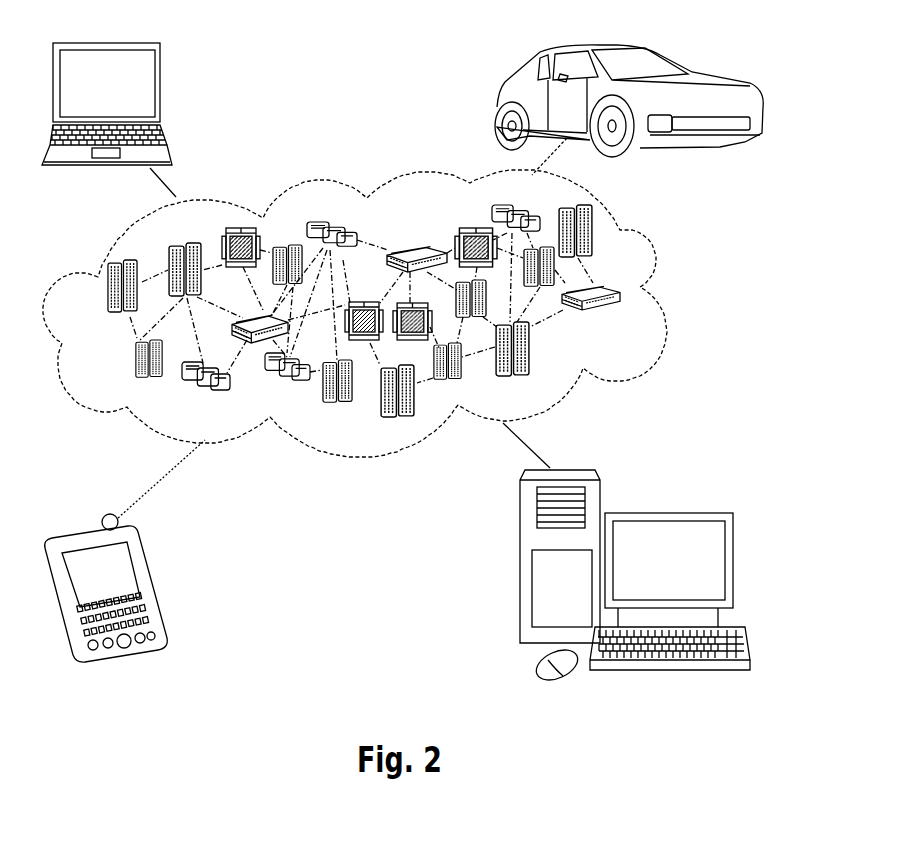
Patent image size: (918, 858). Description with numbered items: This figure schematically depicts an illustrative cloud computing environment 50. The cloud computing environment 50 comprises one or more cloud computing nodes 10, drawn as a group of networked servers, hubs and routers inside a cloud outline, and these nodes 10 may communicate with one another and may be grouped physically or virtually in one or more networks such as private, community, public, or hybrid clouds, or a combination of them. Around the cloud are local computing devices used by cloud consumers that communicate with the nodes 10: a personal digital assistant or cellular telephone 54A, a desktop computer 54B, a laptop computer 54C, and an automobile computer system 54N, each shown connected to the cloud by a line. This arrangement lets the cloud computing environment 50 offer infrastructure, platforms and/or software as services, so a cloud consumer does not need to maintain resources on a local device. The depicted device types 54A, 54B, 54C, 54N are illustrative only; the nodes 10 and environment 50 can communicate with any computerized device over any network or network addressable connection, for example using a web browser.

The cloud computing nodes 10 is at (622, 318).
The cloud computing environment 50 is at (666, 297).
The personal digital assistant or cellular telephone 54A is at (152, 585).
The desktop computer 54B is at (667, 512).
The laptop computer 54C is at (163, 92).
The automobile computer system 54N is at (497, 102).